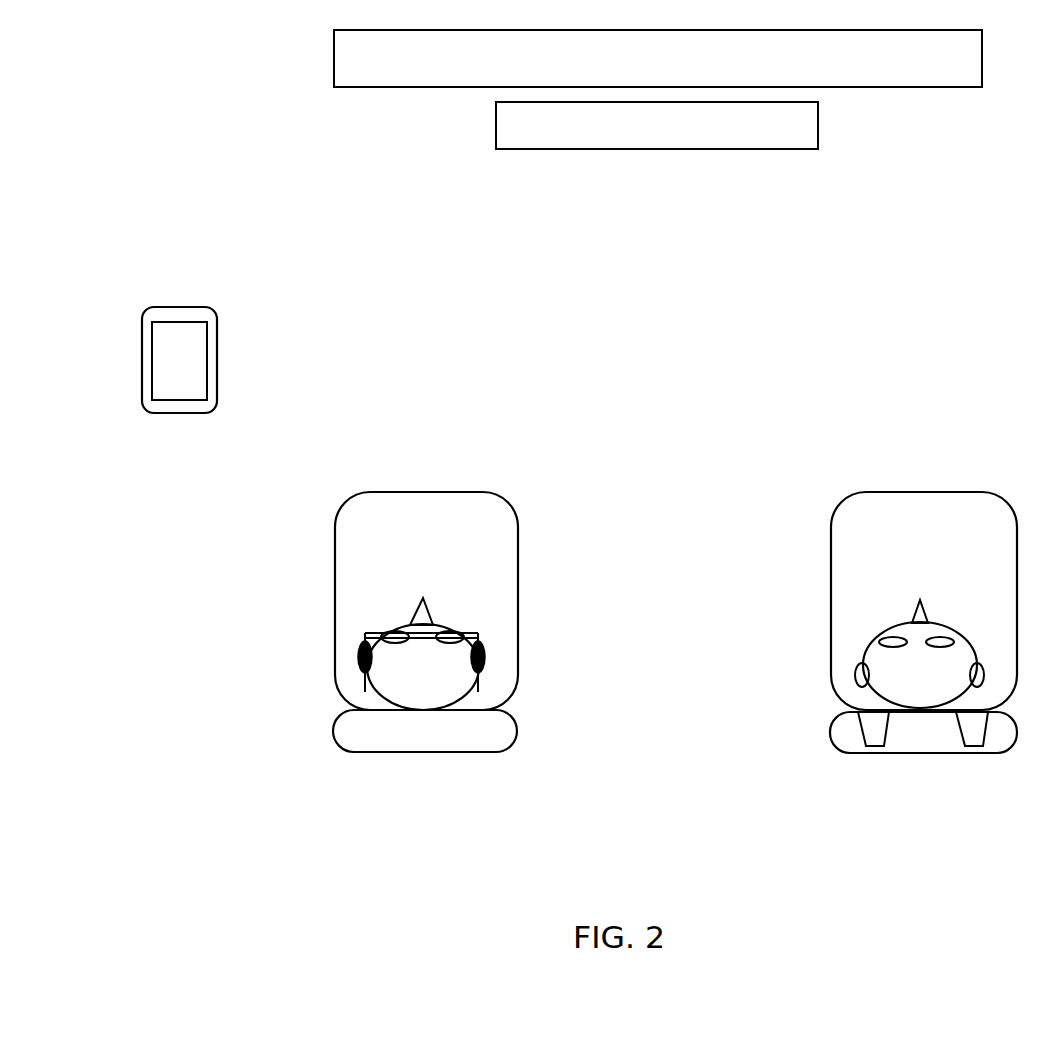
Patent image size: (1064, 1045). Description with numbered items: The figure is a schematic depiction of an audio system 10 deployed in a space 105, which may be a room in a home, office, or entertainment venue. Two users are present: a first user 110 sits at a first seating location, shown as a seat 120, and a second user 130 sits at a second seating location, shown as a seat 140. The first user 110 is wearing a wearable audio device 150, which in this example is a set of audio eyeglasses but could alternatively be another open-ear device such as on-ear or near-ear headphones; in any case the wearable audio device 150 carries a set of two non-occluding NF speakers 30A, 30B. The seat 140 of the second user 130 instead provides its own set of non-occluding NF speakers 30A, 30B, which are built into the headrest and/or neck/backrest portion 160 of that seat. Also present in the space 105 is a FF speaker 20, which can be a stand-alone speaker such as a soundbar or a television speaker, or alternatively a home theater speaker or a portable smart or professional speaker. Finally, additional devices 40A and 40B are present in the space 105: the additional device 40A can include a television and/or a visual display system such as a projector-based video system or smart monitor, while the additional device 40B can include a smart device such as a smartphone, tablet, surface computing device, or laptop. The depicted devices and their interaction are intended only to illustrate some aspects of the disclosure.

The audio system 10 is at (204, 116).
The FF speaker 20 is at (657, 125).
The non-occluding NF speaker 30A is at (341, 656).
The non-occluding NF speaker 30B is at (502, 656).
The additional device 40A is at (658, 58).
The additional device 40B is at (178, 434).
The space 105 is at (702, 317).
The first user 110 is at (401, 575).
The seat 120 is at (429, 470).
The second user 130 is at (899, 582).
The seat 140 is at (870, 469).
The wearable audio device 150 is at (461, 617).
The headrest and/or neck/backrest portion 160 is at (809, 726).